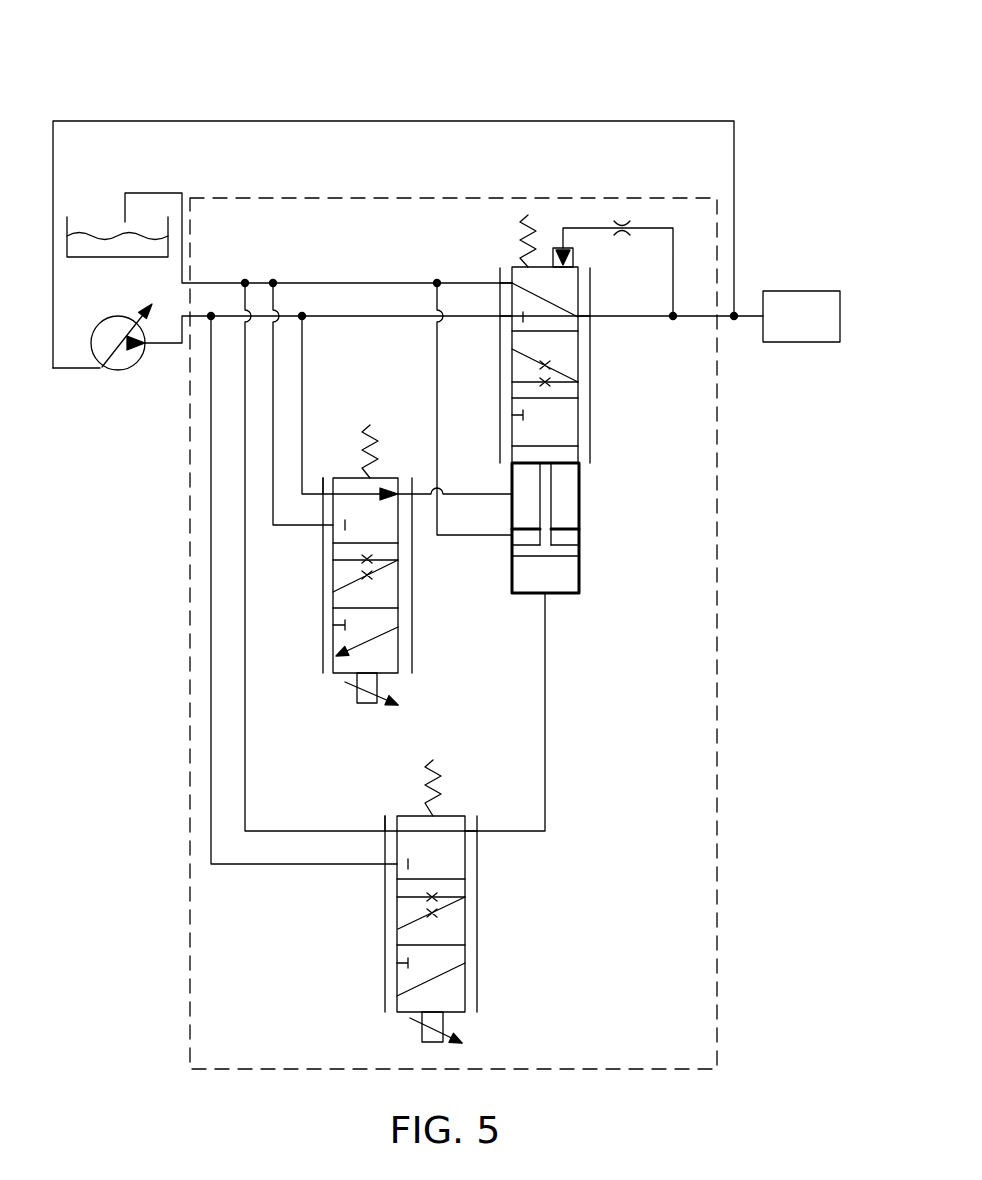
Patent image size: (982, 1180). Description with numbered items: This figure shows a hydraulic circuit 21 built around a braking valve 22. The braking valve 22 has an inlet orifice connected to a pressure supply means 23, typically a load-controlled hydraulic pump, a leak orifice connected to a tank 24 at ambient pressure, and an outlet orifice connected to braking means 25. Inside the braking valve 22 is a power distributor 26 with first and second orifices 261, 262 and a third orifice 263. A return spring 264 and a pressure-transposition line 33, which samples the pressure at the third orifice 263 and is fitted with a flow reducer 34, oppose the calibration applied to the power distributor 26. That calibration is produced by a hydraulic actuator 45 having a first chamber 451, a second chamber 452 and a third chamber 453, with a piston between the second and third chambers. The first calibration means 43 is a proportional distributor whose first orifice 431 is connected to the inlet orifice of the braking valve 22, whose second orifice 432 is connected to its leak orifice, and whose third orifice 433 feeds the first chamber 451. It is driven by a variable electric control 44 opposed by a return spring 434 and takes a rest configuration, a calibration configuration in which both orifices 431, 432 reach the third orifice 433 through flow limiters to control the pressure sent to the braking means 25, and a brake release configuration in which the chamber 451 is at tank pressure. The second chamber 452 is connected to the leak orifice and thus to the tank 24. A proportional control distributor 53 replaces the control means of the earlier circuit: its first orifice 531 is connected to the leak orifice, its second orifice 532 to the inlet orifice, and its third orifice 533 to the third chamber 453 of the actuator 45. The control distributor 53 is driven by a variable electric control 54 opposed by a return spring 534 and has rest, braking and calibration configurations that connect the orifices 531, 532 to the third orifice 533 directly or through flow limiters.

The hydraulic system 21 is at (338, 107).
The braking valve 22 is at (497, 198).
The pressure supply means 23 is at (125, 372).
The tank 24 is at (93, 237).
The braking means 25 is at (810, 296).
The power distributor 26 is at (537, 299).
The first port of proportional valve 261 is at (503, 283).
The second port of proportional valve 262 is at (508, 317).
The third orifice 263 is at (578, 317).
The return spring 264 is at (528, 215).
The pressure-transposition line 33 is at (668, 228).
The flow reducer 34 is at (620, 225).
The first calibration means 43 is at (372, 518).
The first orifice 431 is at (323, 482).
The second orifice 432 is at (322, 525).
The third orifice 433 is at (403, 500).
The return spring 434 is at (365, 425).
The variable electric control 44 is at (367, 705).
The hydraulic actuator 45 is at (564, 551).
The first chamber 451 is at (568, 502).
The second chamber 452 is at (573, 537).
The third chamber 453 is at (565, 593).
The proportional control distributor 53 is at (446, 861).
The first orifice 531 is at (388, 832).
The second orifice 532 is at (385, 865).
The third orifice 533 is at (467, 833).
The return spring 534 is at (428, 762).
The variable electric control 54 is at (420, 1028).